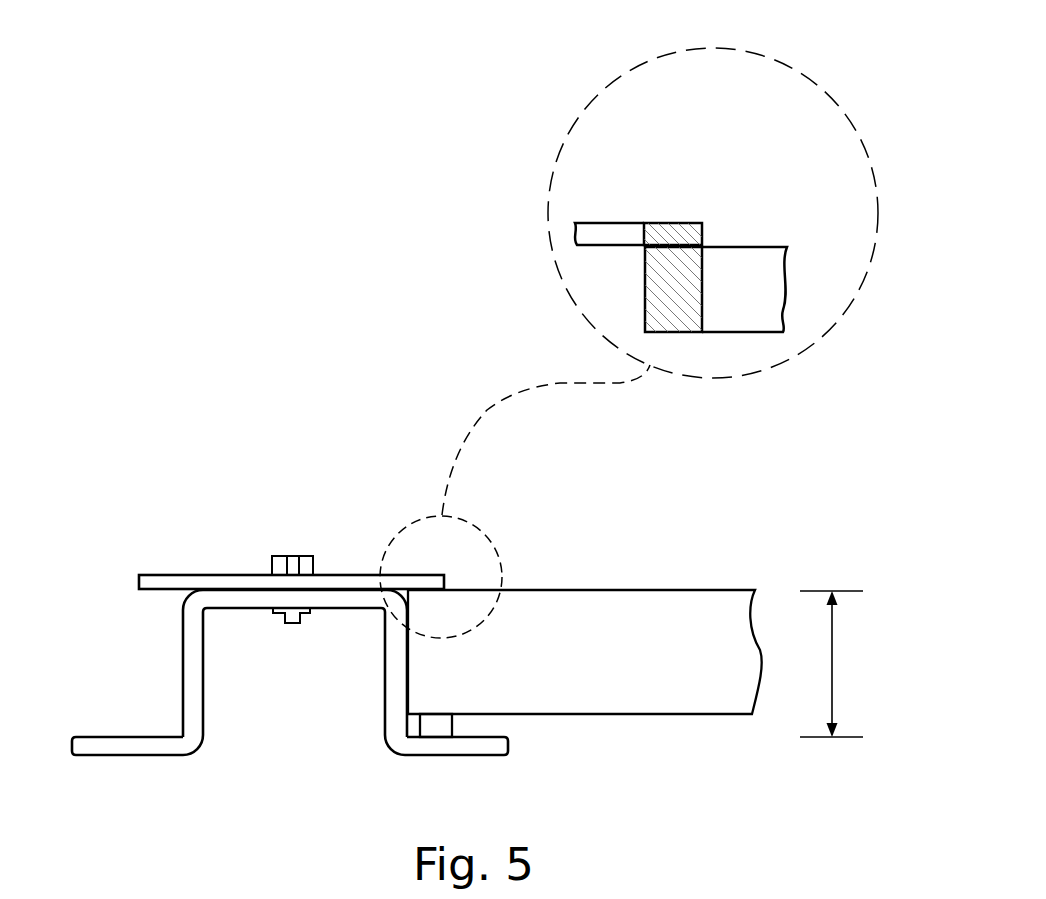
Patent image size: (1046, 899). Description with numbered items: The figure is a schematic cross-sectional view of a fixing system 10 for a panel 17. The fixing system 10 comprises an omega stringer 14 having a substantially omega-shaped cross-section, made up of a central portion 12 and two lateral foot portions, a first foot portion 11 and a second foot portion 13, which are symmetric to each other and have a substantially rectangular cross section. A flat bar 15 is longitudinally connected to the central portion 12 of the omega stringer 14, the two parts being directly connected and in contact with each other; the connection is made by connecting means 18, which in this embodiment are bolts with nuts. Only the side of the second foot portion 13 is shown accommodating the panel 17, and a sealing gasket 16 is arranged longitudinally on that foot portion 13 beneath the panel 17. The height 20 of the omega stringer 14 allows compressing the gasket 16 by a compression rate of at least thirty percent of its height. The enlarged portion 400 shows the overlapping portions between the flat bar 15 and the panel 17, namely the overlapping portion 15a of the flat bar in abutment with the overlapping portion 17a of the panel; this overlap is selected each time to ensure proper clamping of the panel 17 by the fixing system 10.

The fixing system 10 is at (163, 476).
The first foot portion 11 is at (125, 748).
The central portion 12 is at (232, 598).
The second foot portion 13 is at (503, 745).
The omega stringer 14 is at (137, 615).
The flat bar 15 is at (437, 582).
The overlapping portion of the flat bar 15a is at (672, 230).
The sealing gasket 16 is at (448, 722).
The panel 17 is at (597, 617).
The overlapping portion of the panel 17a is at (687, 270).
The connecting means 18 is at (327, 538).
The height of the omega 20 is at (832, 662).
The enlarged portion 400 is at (554, 88).